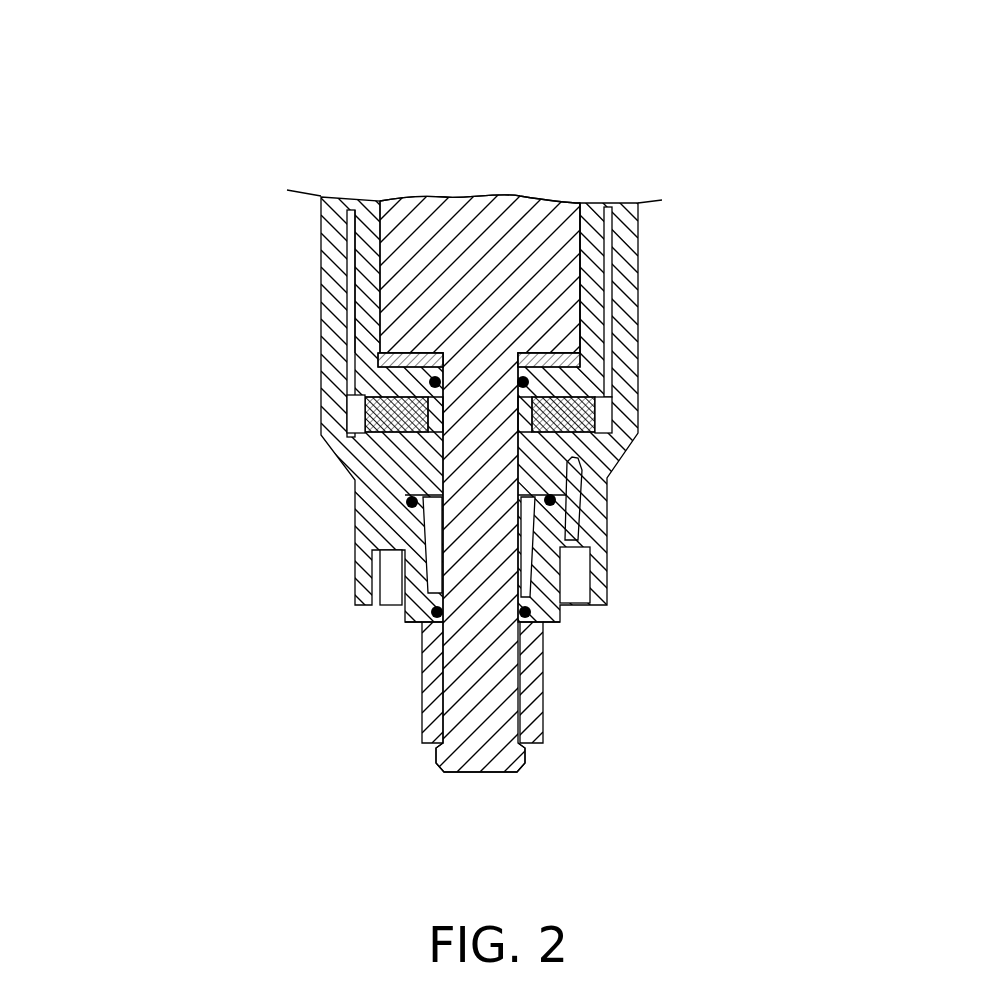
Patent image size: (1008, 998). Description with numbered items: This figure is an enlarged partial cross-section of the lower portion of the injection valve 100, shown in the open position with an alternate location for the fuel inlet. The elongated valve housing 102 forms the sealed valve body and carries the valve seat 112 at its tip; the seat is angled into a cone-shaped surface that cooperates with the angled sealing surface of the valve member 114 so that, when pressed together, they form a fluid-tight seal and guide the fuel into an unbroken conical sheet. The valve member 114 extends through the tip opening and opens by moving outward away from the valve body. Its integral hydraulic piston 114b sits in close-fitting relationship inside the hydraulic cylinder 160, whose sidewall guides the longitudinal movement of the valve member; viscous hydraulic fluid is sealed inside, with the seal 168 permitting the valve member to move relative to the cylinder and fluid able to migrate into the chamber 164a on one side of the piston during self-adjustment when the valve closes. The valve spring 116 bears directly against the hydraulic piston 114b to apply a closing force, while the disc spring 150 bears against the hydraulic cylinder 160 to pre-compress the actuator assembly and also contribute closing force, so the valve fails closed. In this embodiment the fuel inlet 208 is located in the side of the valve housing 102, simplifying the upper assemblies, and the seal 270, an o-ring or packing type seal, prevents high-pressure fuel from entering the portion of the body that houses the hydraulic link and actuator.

The injection valve 100 is at (350, 105).
The valve housing 102 is at (640, 202).
The valve seat 112 is at (522, 745).
The valve member 114 is at (497, 635).
The hydraulic piston 114b is at (563, 238).
The valve spring 116 is at (380, 360).
The disc spring 150 is at (363, 432).
The hydraulic cylinder 160 is at (590, 280).
The chamber 164a is at (408, 355).
The seal 168 is at (595, 402).
The fuel inlet 208 is at (427, 638).
The seal 270 is at (582, 587).